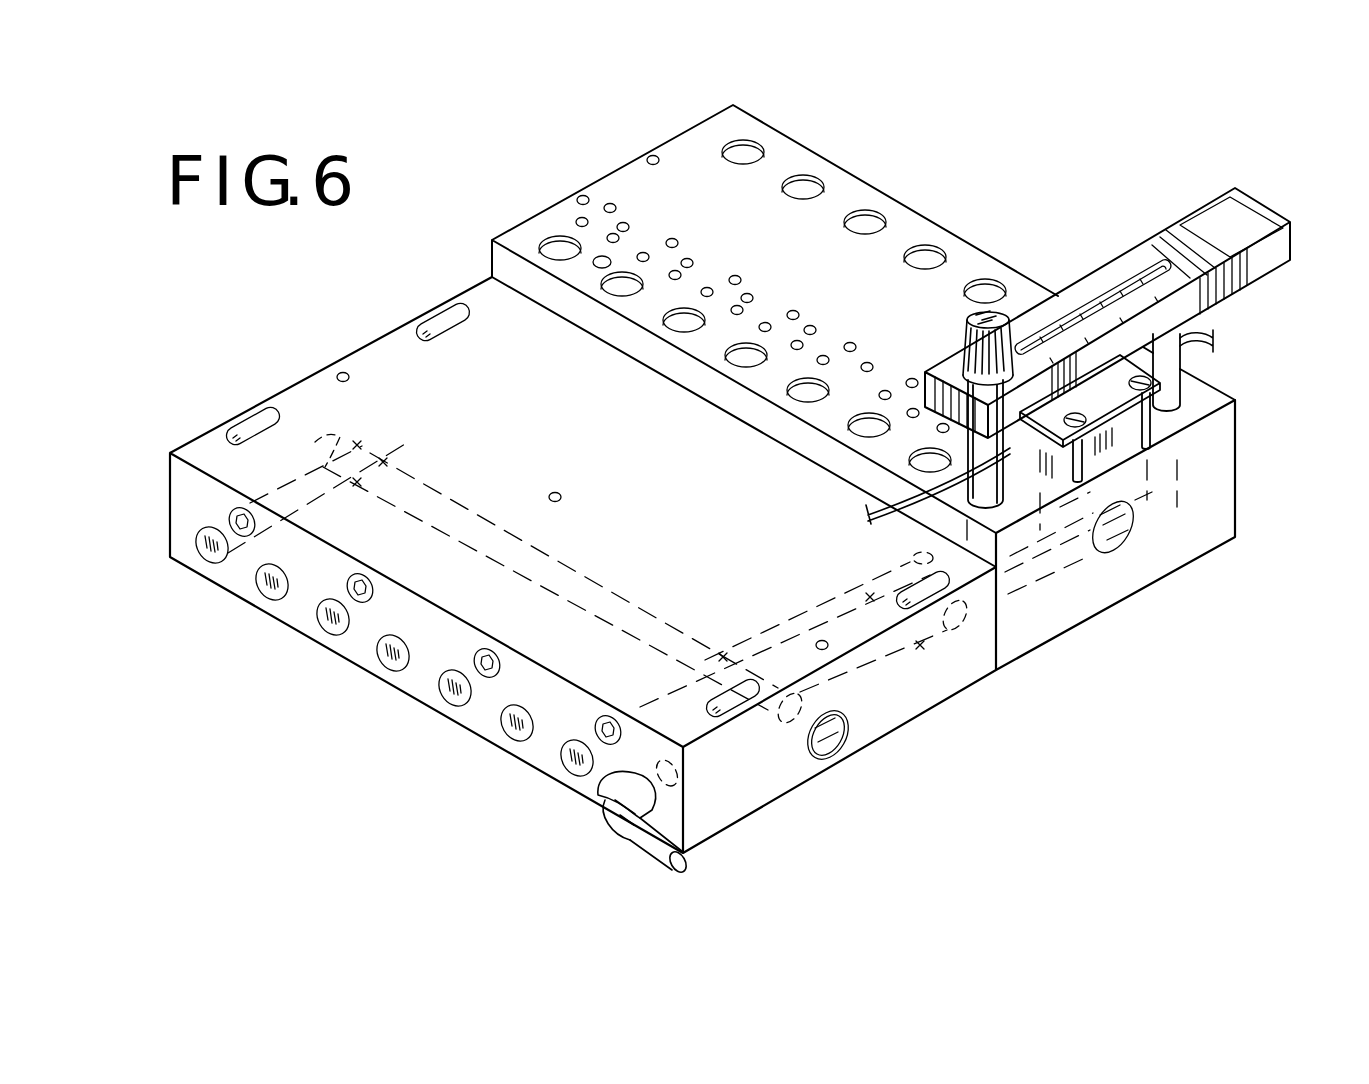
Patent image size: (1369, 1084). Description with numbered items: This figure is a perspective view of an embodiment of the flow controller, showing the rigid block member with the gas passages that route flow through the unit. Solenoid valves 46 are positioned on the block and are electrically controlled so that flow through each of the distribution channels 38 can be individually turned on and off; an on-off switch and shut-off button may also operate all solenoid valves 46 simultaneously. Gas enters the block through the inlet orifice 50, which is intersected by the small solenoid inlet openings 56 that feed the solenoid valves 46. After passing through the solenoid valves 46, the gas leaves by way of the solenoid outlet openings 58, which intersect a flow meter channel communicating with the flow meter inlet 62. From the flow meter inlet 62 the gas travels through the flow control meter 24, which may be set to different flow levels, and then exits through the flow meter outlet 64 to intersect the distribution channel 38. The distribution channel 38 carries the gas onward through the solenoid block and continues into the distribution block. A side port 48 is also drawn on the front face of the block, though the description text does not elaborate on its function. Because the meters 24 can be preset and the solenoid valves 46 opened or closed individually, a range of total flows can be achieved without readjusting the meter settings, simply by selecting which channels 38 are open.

The flow control meter 24 is at (1253, 270).
The distribution channel 38 is at (926, 661).
The solenoid valve 46 is at (1093, 438).
The side port 48 is at (824, 737).
The inlet orifice 50 is at (1113, 527).
The solenoid inlet opening 56 is at (856, 347).
The solenoid outlet opening 58 is at (812, 328).
The flow meter inlet 62 is at (560, 240).
The flow meter outlet 64 is at (743, 148).